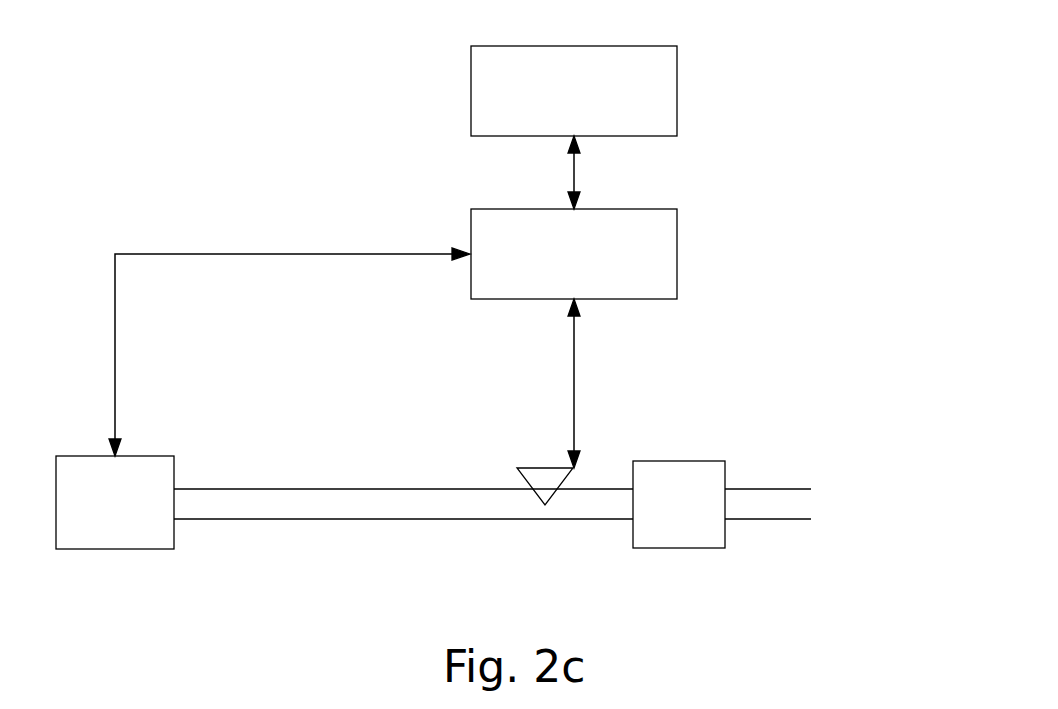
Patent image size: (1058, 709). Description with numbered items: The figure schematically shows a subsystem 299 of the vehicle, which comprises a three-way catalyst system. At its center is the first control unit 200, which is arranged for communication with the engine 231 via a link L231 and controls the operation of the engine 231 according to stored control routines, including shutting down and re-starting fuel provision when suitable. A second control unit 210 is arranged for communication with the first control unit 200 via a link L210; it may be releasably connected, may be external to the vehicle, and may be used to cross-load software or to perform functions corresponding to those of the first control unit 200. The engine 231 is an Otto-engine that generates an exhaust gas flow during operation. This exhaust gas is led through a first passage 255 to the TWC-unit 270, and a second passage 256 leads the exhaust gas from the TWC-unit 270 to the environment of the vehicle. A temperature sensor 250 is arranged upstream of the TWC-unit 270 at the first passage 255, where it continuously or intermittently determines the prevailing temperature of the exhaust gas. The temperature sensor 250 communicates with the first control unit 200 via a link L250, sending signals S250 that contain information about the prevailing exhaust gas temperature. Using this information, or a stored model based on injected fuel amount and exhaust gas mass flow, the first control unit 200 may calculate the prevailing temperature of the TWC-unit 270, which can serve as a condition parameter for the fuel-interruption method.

The second control unit 210 is at (553, 104).
The first control unit 200 is at (553, 267).
The engine 231 is at (93, 516).
The TWC-unit 270 is at (658, 514).
The first passage 255 is at (355, 520).
The second passage 256 is at (772, 520).
The temperature sensor 250 is at (517, 468).
The link L210 is at (575, 180).
The link L231 is at (114, 344).
The link L250 is at (573, 360).
The signals S250 is at (633, 355).
The subsystem 299 is at (760, 135).